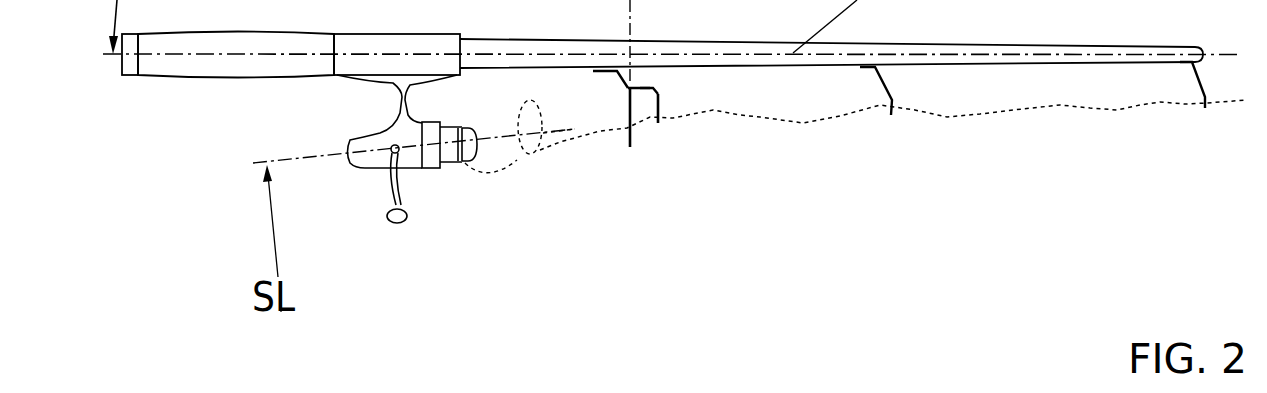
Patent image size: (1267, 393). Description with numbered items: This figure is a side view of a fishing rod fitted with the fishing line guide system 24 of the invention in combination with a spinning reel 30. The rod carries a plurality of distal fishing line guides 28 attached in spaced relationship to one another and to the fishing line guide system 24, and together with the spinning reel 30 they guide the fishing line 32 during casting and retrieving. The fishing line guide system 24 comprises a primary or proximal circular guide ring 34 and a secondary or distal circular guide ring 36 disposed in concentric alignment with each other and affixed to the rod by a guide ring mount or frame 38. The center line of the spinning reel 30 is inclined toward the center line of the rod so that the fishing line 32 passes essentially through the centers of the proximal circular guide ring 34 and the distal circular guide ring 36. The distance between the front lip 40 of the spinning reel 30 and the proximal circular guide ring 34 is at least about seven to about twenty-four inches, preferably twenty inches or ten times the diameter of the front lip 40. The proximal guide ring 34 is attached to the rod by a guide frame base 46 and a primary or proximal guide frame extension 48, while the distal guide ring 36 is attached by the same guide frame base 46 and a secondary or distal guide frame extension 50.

The fishing line guide system 24 is at (650, 192).
The distal fishing line guide 28 is at (888, 132).
The spinning reel 30 is at (352, 152).
The fishing line 32 is at (797, 122).
The primary or proximal circular guide ring 34 is at (629, 145).
The secondary or distal circular guide ring 36 is at (658, 125).
The guide ring mount or frame 38 is at (609, 118).
The front lip 40 is at (460, 167).
The guide frame base 46 is at (619, 74).
The primary or proximal guide frame extension 48 is at (633, 88).
The secondary or distal guide frame extension 50 is at (645, 92).